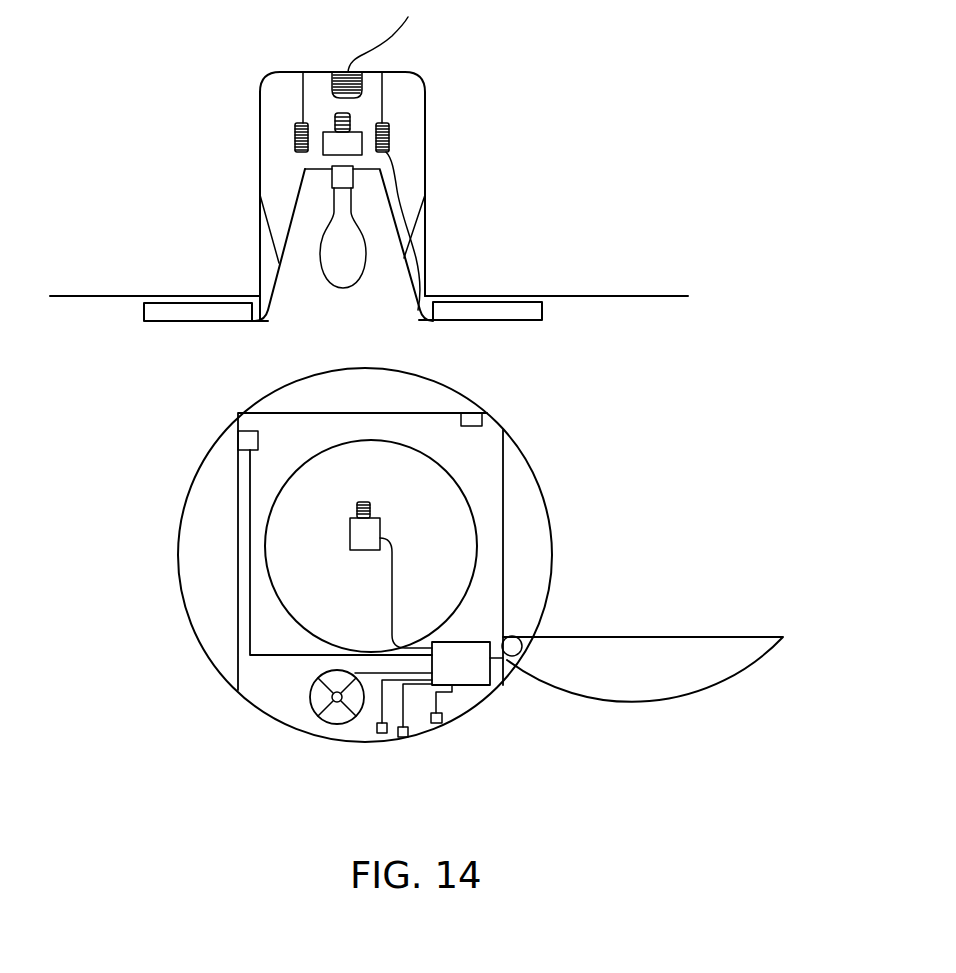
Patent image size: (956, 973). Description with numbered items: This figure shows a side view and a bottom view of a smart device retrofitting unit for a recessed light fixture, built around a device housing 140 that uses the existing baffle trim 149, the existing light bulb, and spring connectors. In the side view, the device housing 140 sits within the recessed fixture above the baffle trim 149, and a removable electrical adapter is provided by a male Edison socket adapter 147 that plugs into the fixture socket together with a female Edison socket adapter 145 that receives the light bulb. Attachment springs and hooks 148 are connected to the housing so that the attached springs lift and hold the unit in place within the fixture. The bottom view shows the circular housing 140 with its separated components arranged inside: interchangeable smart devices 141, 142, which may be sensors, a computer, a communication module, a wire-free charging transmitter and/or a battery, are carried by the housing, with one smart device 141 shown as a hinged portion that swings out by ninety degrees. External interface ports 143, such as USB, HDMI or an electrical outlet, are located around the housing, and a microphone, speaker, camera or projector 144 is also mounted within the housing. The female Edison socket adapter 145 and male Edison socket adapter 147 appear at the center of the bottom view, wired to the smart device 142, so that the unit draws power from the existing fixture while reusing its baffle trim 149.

The device housing 140 is at (514, 306).
The interchangeable smart device 141 is at (530, 505).
The interchangeable smart device 142 is at (477, 675).
The external interface port 143 is at (262, 423).
The microphone, speaker, camera, or projector 144 is at (308, 702).
The Edison socket female adapter 145 is at (368, 84).
The Edison socket male adapter 147 is at (362, 116).
The attachment spring and hook 148 is at (402, 147).
The baffle trim 149 is at (270, 263).